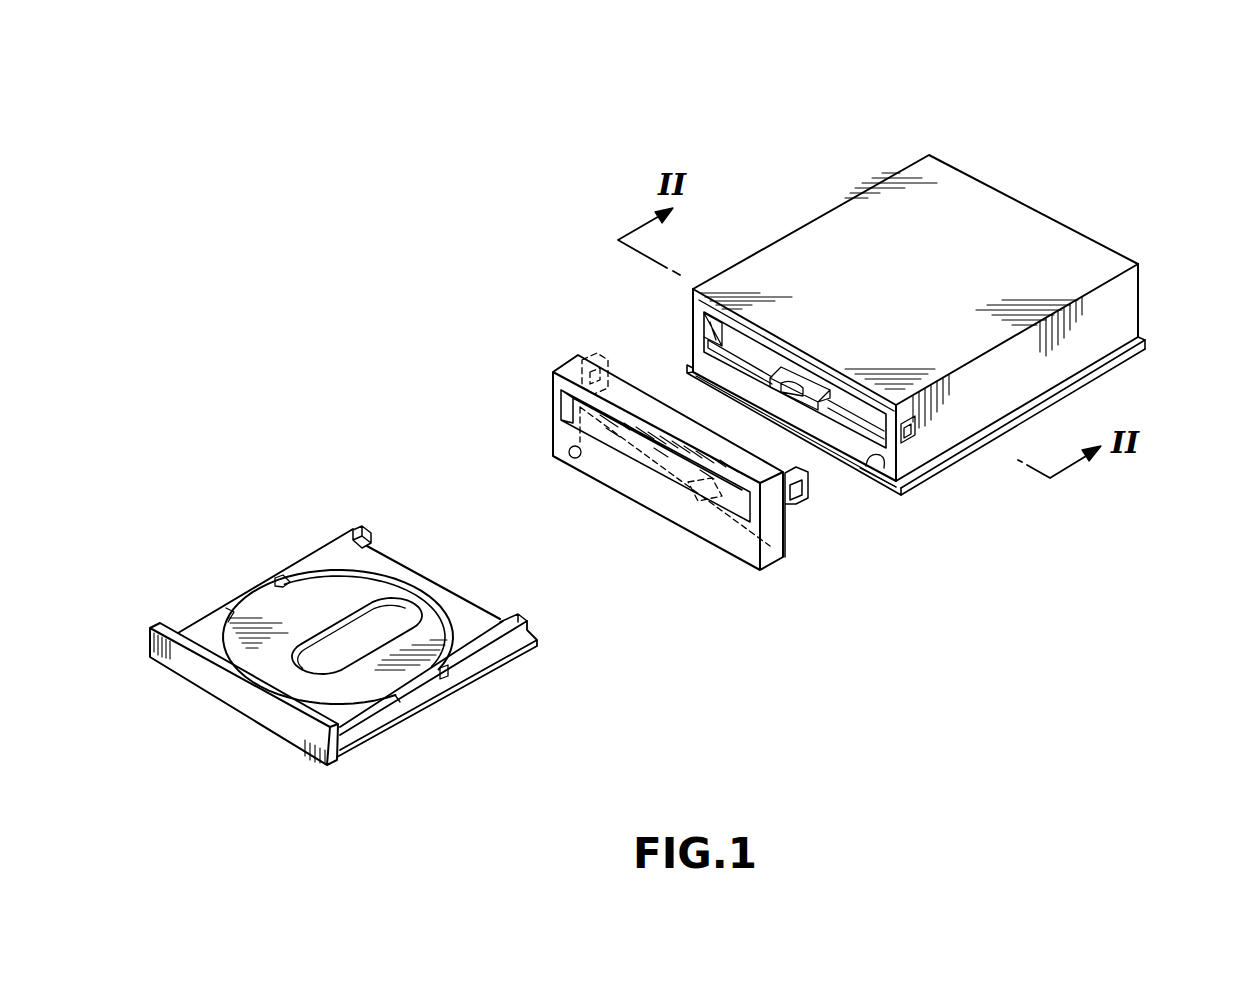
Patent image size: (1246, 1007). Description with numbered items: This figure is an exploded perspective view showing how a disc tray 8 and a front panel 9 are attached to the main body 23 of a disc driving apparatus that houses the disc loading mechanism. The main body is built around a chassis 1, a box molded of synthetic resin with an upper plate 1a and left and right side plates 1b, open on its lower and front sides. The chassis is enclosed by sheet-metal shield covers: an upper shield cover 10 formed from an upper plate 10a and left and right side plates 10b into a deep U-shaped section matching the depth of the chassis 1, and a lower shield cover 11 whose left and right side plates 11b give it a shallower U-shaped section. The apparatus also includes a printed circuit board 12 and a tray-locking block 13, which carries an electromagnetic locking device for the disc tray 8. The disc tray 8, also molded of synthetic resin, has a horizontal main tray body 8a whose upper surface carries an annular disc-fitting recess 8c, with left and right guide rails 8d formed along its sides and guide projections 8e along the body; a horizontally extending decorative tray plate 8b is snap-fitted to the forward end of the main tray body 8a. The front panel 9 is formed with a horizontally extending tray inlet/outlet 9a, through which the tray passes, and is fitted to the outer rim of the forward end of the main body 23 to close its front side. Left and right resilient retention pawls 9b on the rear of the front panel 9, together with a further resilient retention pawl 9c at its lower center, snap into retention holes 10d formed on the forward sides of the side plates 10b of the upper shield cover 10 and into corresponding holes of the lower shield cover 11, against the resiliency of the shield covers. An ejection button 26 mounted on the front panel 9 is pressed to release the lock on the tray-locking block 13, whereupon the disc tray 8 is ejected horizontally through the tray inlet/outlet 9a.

The chassis 1 is at (785, 351).
The upper plate 1a is at (828, 373).
The left and right side plates 1b is at (701, 312).
The disc tray 8 is at (219, 713).
The main tray body 8a is at (216, 620).
The decorative tray plate 8b is at (278, 731).
The annular disc-fitting recess 8c is at (327, 585).
The left and right guide rails 8d is at (285, 573).
The guide projections 8e is at (368, 542).
The front panel 9 is at (714, 546).
The tray inlet/outlet 9a is at (627, 447).
The left and right resilient retention pawls 9b is at (603, 360).
The resilient retention pawl 9c is at (690, 488).
The upper shield cover 10 is at (977, 197).
The upper plate 10a is at (1088, 252).
The left and right side plates 10b is at (1122, 310).
The retention holes 10d is at (920, 433).
The lower shield cover 11 is at (1000, 446).
The left and right side plates 11b is at (1133, 353).
The printed circuit board 12 is at (885, 498).
The tray-locking block 13 is at (804, 410).
The main body of the disc driving apparatus 23 is at (1049, 205).
The ejection button 26 is at (570, 452).